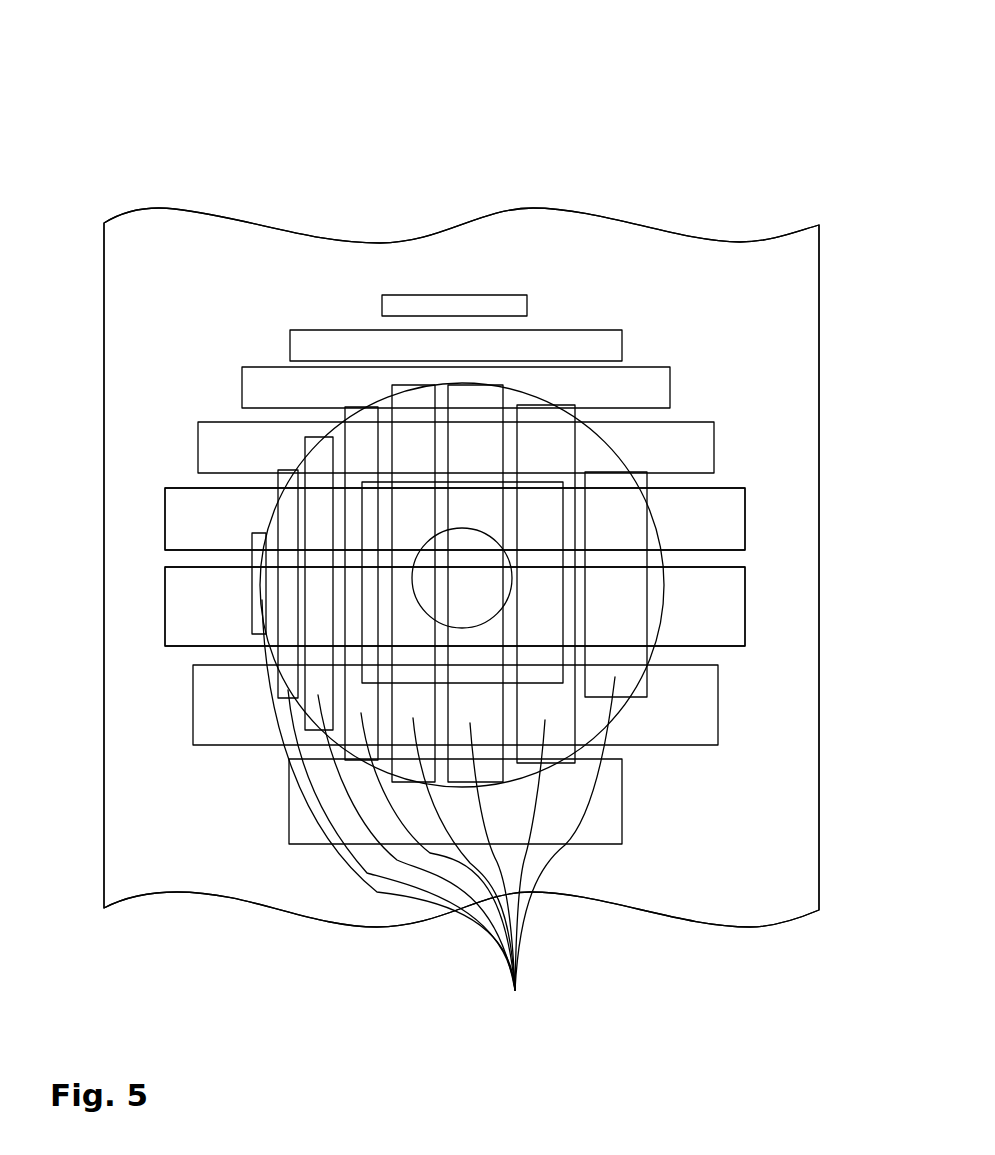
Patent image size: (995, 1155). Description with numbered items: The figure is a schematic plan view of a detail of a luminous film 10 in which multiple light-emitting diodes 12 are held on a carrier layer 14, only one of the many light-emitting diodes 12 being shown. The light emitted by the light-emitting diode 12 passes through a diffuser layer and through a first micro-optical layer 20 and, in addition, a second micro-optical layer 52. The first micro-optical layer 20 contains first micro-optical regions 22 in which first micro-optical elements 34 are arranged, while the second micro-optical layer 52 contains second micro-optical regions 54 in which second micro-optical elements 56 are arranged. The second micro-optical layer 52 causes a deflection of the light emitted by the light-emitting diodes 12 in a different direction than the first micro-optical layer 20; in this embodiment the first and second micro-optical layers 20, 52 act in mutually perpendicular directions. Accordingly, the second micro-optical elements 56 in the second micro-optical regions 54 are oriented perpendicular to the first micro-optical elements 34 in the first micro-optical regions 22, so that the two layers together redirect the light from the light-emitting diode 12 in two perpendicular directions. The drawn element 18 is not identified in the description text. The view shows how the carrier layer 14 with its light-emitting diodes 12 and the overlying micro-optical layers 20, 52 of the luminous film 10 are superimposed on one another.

The luminous film 10 is at (672, 117).
The light-emitting diode 12 is at (462, 525).
The carrier layer 14 is at (152, 257).
The circular sensor element 18 is at (528, 394).
The first micro-optical layer 20 is at (155, 653).
The first micro-optical region 22 is at (377, 600).
The first micro-optical element 34 is at (382, 305).
The second micro-optical layer 52 is at (583, 452).
The second micro-optical region 54 is at (622, 505).
The second micro-optical element 56 is at (438, 811).